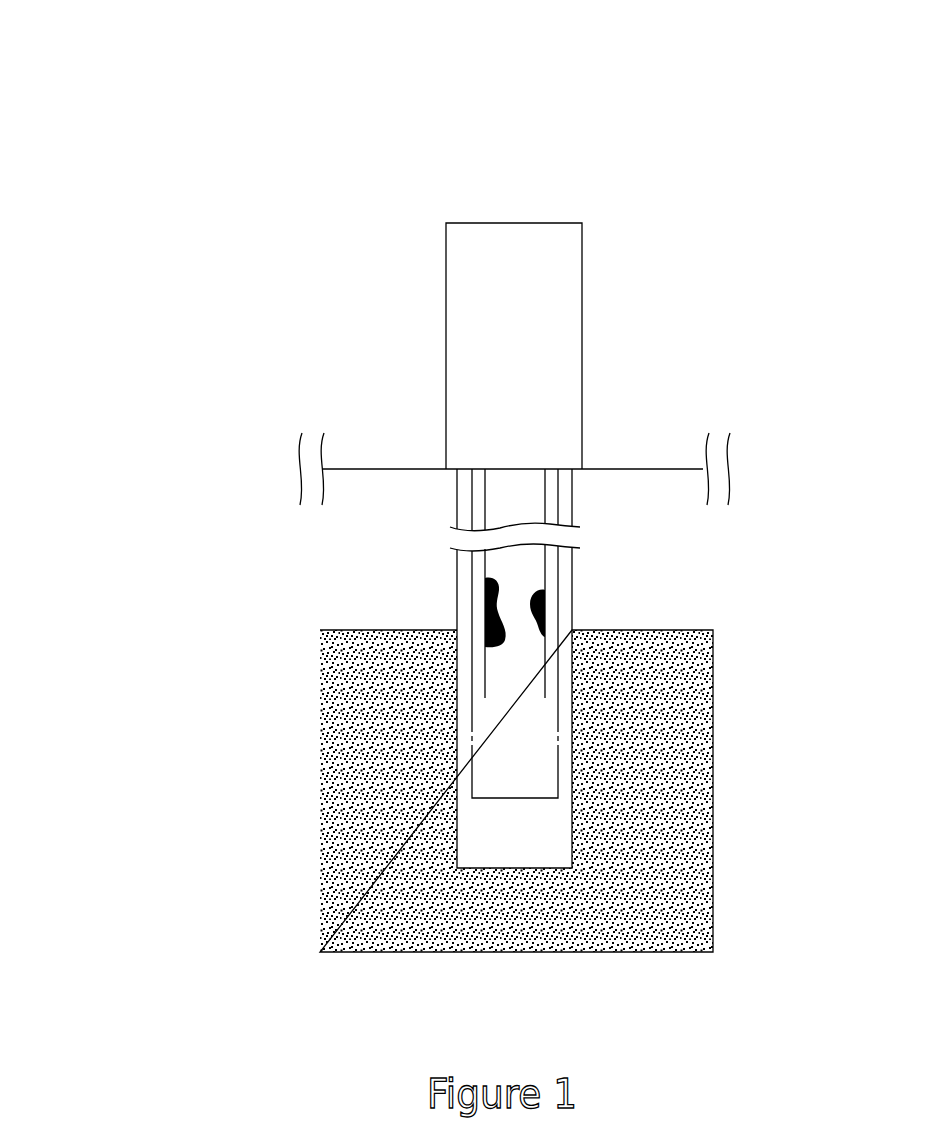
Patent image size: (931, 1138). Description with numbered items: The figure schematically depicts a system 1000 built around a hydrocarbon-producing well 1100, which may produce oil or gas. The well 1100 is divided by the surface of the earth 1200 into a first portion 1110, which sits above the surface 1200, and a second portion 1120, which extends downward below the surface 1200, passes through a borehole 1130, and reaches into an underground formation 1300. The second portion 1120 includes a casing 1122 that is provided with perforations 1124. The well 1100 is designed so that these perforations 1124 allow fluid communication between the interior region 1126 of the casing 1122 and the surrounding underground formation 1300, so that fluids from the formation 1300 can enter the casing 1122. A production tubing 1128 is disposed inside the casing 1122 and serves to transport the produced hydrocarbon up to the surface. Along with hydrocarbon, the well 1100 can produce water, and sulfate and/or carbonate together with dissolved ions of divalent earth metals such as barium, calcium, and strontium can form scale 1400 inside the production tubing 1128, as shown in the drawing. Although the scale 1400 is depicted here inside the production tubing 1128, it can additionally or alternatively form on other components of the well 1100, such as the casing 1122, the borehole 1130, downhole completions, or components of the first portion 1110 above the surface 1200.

The system 1000 is at (763, 90).
The hydrocarbon-producing well 1100 is at (303, 312).
The first portion 1110 is at (446, 268).
The second portion 1120 is at (410, 553).
The casing 1122 is at (560, 577).
The perforations 1124 is at (560, 728).
The interior region 1126 is at (500, 773).
The production tubing 1128 is at (545, 680).
The borehole 1130 is at (465, 685).
The surface of the earth 1200 is at (620, 468).
The underground formation 1300 is at (160, 728).
The scale 1400 is at (487, 605).